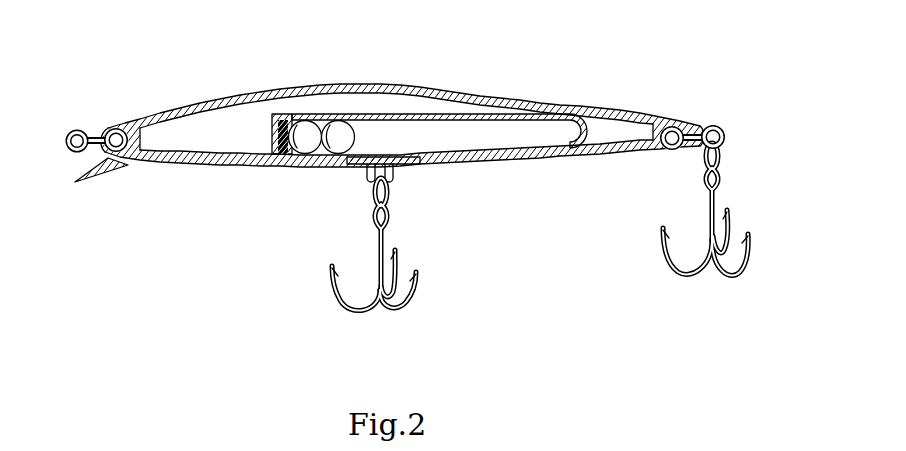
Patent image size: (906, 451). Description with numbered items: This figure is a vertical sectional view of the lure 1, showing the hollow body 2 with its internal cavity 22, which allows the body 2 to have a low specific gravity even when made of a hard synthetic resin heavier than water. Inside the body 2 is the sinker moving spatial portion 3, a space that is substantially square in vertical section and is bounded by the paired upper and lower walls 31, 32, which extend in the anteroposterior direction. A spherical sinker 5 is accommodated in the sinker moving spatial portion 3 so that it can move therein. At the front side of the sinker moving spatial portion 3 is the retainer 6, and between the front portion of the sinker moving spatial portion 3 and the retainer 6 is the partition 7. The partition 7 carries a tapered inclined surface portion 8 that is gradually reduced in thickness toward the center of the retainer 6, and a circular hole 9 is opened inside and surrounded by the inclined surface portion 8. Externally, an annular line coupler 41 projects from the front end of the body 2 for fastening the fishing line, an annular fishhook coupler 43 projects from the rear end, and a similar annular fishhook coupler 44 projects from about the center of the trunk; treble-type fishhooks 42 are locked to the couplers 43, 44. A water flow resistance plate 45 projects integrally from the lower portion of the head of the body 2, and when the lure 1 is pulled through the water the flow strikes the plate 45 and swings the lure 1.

The lure 1 is at (796, 264).
The body 2 is at (402, 124).
The cavity 22 is at (205, 108).
The lower wall 32 is at (487, 158).
The sinker moving spatial portion 3 is at (571, 150).
The upper wall 31 is at (499, 114).
The spherical sinker 5 is at (310, 122).
The retainer 6 is at (266, 166).
The partition 7 is at (272, 113).
The inclined surface portion 8 is at (284, 119).
The circular hole 9 is at (303, 167).
The annular line coupler 41 is at (68, 127).
The fishhook 42 is at (365, 310).
The annular fishhook coupler 43 is at (719, 127).
The annular fishhook coupler 44 is at (393, 178).
The water flow resistance plate 45 is at (101, 172).